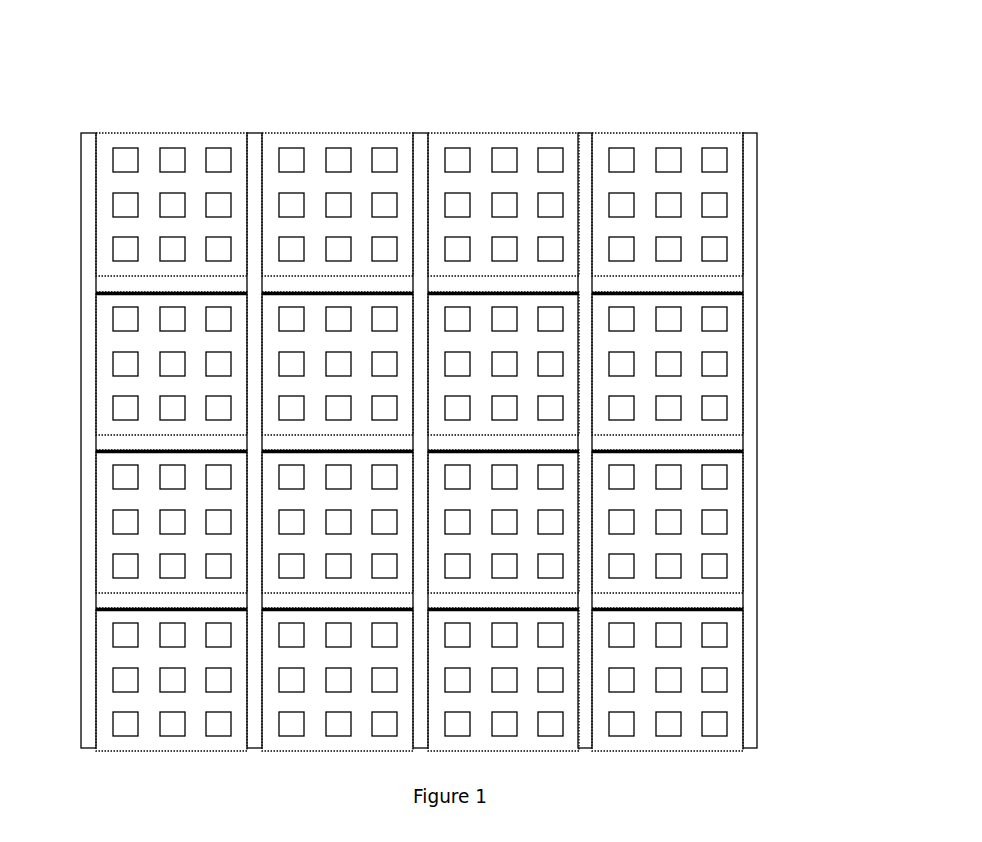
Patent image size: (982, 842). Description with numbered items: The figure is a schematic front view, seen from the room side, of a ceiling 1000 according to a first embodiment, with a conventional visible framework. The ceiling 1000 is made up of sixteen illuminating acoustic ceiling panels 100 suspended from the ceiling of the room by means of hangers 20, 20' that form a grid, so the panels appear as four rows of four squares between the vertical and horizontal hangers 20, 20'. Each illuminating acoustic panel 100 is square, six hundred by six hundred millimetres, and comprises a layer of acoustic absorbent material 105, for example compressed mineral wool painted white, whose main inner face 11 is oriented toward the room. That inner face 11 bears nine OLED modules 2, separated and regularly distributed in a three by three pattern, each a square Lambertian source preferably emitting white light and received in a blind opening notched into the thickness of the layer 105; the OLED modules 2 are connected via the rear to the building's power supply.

The ceiling 1000 is at (808, 218).
The illuminating acoustic ceiling panel 100 is at (736, 137).
The layer of acoustic absorbent material 105 is at (315, 156).
The OLED module 2 is at (125, 156).
The main inner face 11 is at (652, 182).
The hanger 20 is at (443, 440).
The hanger 20' is at (385, 452).